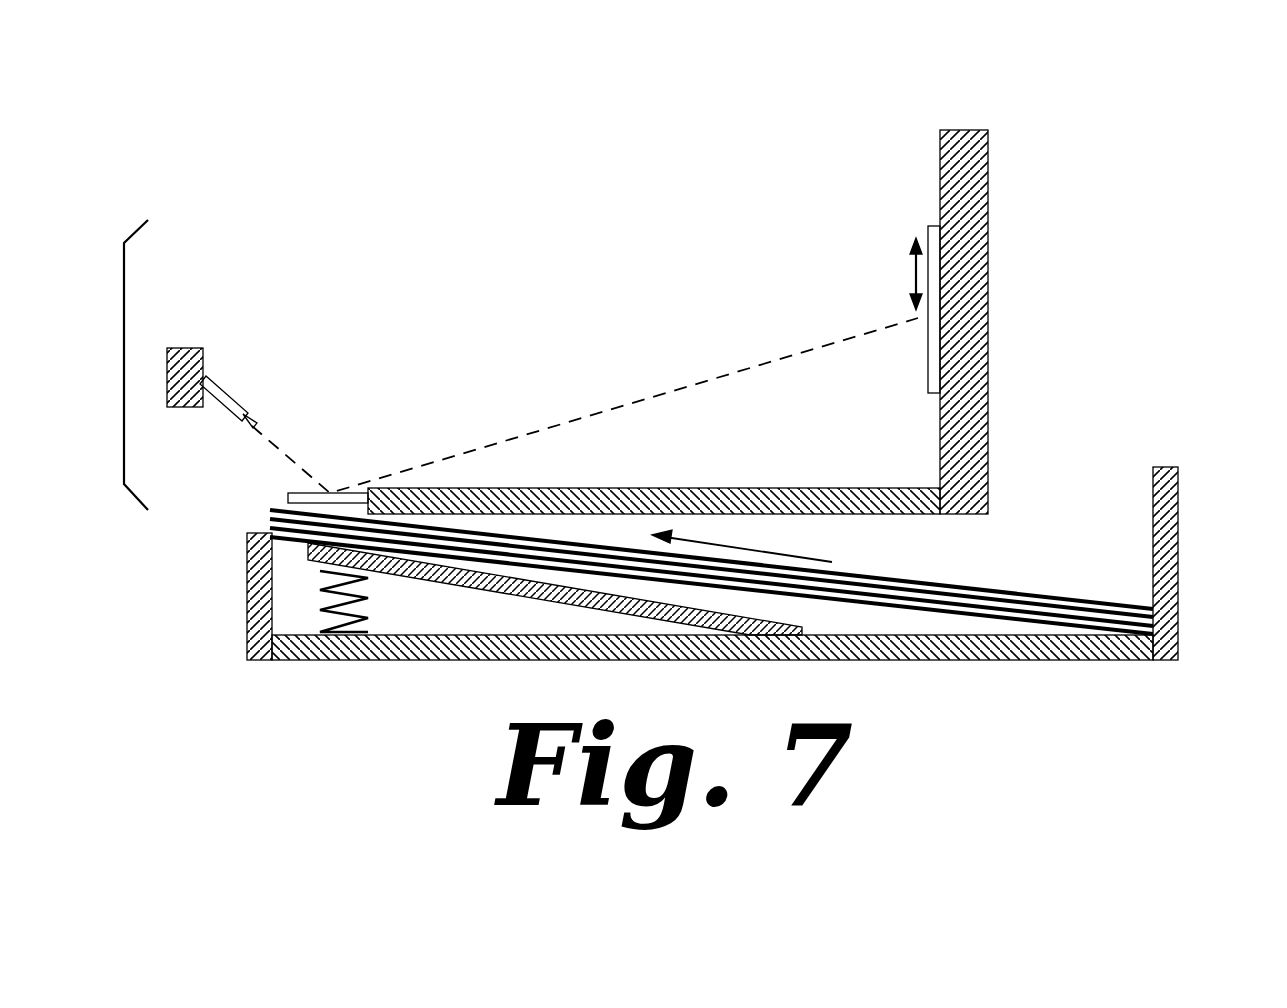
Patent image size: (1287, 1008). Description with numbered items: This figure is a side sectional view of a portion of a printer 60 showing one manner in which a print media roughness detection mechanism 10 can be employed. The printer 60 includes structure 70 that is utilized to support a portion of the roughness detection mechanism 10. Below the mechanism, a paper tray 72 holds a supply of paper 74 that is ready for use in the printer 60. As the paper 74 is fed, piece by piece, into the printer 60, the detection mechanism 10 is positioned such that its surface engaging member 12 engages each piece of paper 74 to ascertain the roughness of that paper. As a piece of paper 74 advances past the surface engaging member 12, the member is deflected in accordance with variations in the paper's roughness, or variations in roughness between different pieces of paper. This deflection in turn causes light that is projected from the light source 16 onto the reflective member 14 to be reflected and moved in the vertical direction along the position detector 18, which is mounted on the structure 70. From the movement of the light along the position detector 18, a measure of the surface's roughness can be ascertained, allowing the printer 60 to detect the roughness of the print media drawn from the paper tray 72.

The roughness detection mechanism 10 is at (123, 338).
The surface engaging member 12 is at (290, 507).
The reflective member 14 is at (290, 490).
The light source 16 is at (240, 398).
The position detector 18 is at (928, 236).
The printer 60 is at (1028, 98).
The structure 70 is at (188, 348).
The paper tray 72 is at (1178, 560).
The paper 74 is at (937, 583).